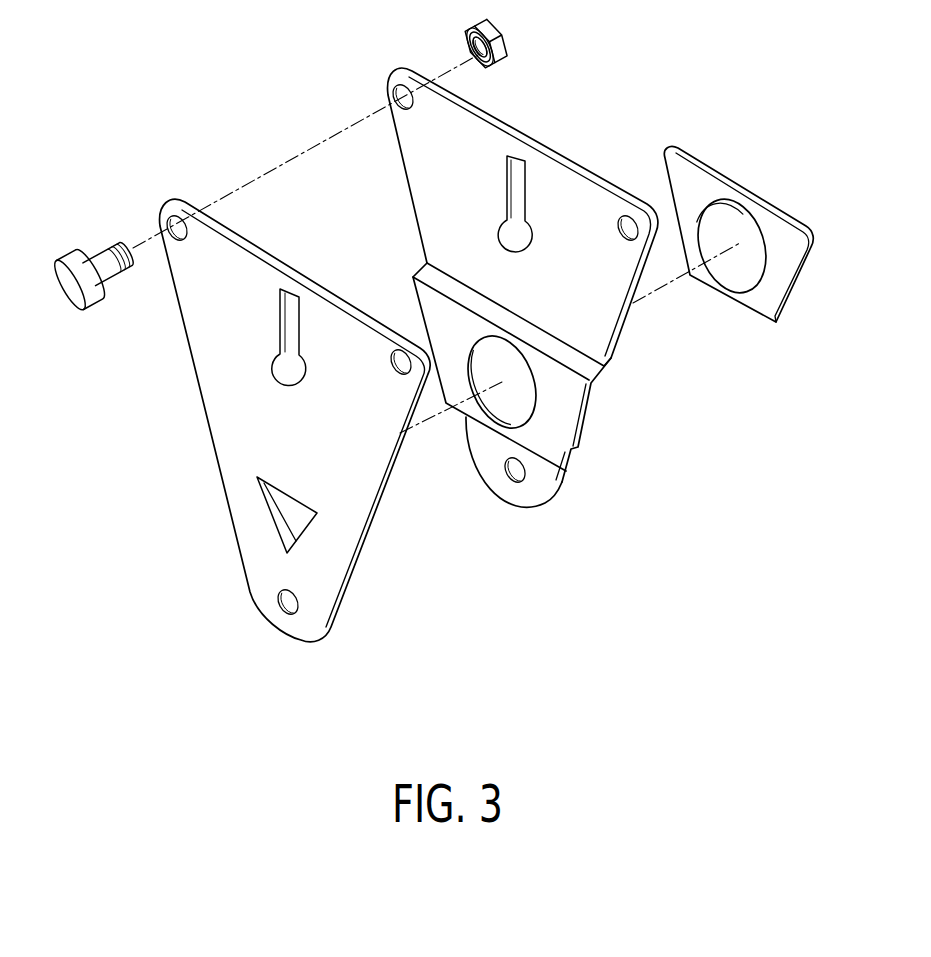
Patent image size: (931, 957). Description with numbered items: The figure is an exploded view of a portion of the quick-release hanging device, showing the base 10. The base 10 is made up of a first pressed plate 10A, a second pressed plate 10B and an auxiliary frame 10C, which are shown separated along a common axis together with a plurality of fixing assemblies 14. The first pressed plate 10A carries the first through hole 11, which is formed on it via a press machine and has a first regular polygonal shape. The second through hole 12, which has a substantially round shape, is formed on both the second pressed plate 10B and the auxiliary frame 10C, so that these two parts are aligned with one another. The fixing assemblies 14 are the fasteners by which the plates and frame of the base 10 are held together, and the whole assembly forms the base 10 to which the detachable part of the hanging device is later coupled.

The base 10 is at (487, 354).
The first pressed plate 10A is at (314, 420).
The second pressed plate 10B is at (585, 408).
The auxiliary frame 10C is at (782, 310).
The first through hole 11 is at (296, 527).
The second through hole 12 is at (499, 338).
The fixing assemblies 14 is at (80, 261).